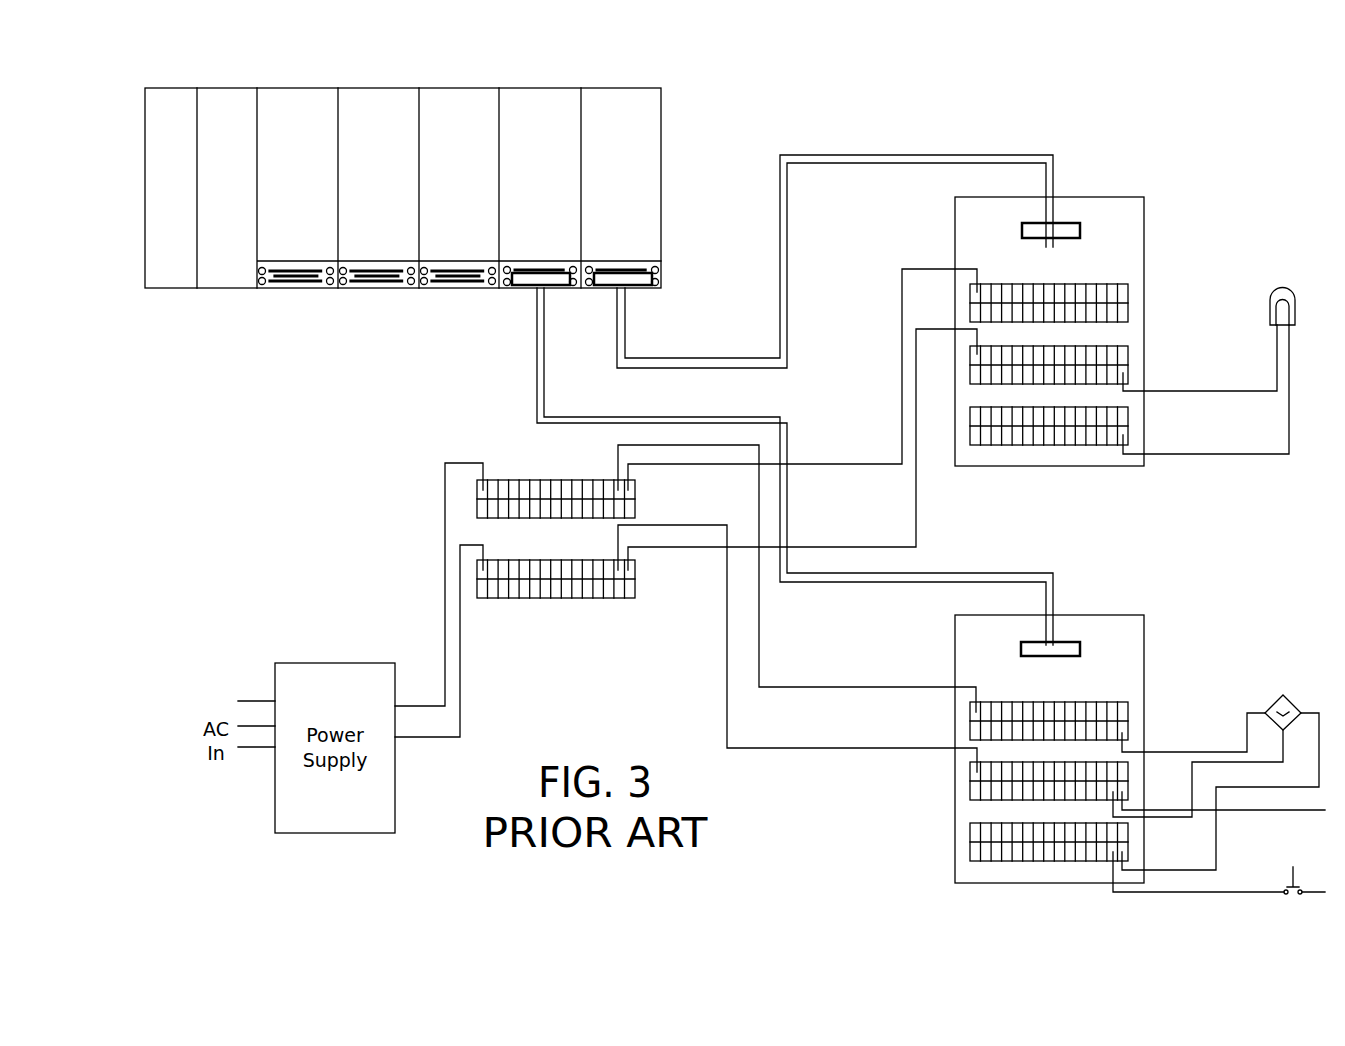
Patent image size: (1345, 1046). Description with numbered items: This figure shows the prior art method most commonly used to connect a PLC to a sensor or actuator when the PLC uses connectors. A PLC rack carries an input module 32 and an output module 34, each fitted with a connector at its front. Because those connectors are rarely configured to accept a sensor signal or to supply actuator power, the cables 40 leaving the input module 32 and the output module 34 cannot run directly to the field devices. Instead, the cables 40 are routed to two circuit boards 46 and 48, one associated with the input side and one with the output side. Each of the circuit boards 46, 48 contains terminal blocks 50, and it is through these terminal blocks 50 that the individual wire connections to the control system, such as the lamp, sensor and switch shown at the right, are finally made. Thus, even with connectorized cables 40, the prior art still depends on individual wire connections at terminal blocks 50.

The input module 32 is at (542, 85).
The output module 34 is at (621, 85).
The cables 40 is at (853, 153).
The circuit board 46 is at (1121, 197).
The circuit board 48 is at (1107, 615).
The terminal blocks 50 is at (1092, 275).